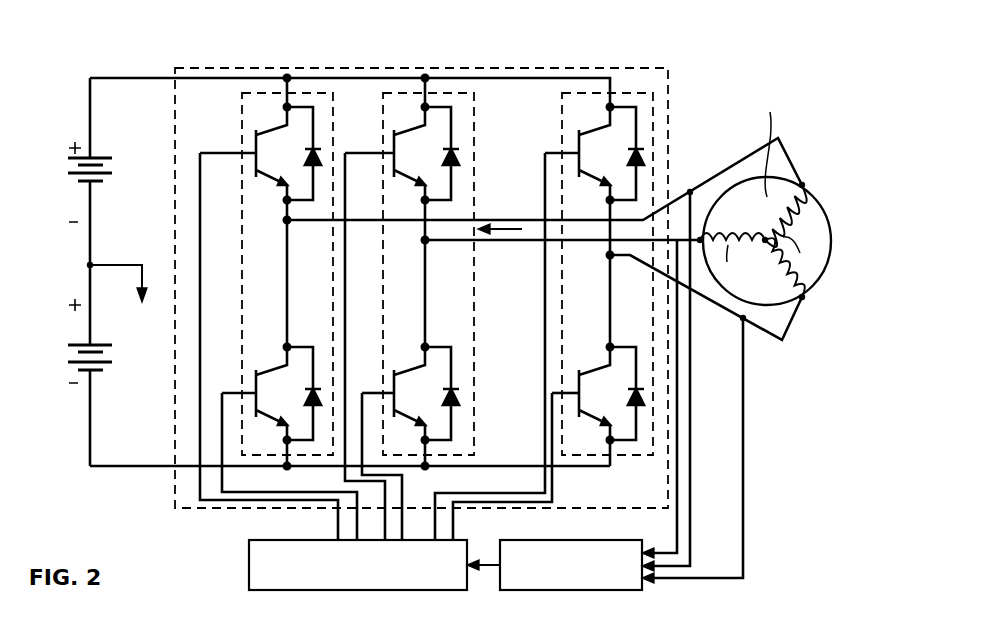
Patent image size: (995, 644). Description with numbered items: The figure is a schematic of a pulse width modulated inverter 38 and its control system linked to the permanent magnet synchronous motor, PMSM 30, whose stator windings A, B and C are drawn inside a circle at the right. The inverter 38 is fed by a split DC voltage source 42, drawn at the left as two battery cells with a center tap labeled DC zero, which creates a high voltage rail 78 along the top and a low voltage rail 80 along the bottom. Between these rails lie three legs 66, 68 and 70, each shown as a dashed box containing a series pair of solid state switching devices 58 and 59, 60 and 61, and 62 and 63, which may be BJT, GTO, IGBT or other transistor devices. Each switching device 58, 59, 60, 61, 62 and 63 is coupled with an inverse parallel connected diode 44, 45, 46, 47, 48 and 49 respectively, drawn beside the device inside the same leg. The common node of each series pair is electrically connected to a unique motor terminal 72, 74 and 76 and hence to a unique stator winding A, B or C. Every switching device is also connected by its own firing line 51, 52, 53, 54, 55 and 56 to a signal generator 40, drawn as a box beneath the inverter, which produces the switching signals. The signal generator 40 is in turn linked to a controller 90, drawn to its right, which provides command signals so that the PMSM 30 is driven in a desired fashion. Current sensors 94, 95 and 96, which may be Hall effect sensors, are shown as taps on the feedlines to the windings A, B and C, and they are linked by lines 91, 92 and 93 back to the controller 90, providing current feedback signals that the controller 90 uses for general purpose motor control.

The PMSM 30 is at (820, 189).
The pulse width modulated inverter 38 is at (222, 67).
The signal generator 40 is at (357, 590).
The DC voltage source 42 is at (72, 104).
The inverse parallel connected diode 44 is at (318, 156).
The inverse parallel connected diode 45 is at (305, 395).
The inverse parallel connected diode 46 is at (456, 156).
The inverse parallel connected diode 47 is at (455, 392).
The inverse parallel connected diode 48 is at (648, 152).
The inverse parallel connected diode 49 is at (641, 397).
The firing line 51 is at (245, 503).
The firing line 52 is at (262, 500).
The firing line 53 is at (347, 370).
The firing line 54 is at (360, 446).
The firing line 55 is at (487, 492).
The firing line 56 is at (562, 502).
The solid state switching device 58 is at (298, 112).
The solid state switching device 59 is at (295, 352).
The solid state switching device 60 is at (438, 112).
The solid state switching device 61 is at (433, 352).
The solid state switching device 62 is at (628, 112).
The solid state switching device 63 is at (622, 352).
The leg 66 is at (257, 105).
The leg 68 is at (397, 107).
The leg 70 is at (580, 107).
The motor terminal 72 is at (803, 178).
The motor terminal 74 is at (725, 228).
The motor terminal 76 is at (803, 305).
The high voltage rail 78 is at (145, 80).
The low voltage rail 80 is at (128, 467).
The controller 90 is at (572, 590).
The line 91 is at (692, 427).
The line 92 is at (676, 525).
The line 93 is at (745, 540).
The current sensor 94 is at (688, 188).
The current sensor 95 is at (672, 245).
The current sensor 96 is at (748, 322).